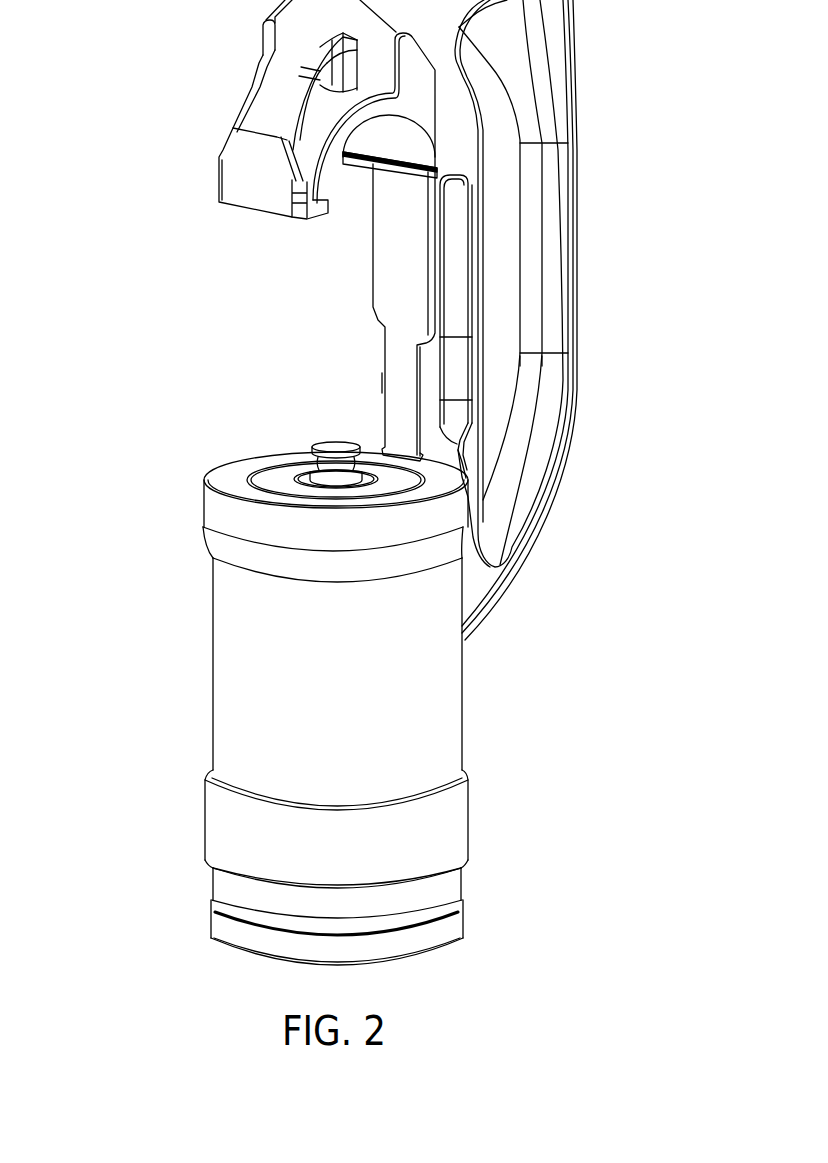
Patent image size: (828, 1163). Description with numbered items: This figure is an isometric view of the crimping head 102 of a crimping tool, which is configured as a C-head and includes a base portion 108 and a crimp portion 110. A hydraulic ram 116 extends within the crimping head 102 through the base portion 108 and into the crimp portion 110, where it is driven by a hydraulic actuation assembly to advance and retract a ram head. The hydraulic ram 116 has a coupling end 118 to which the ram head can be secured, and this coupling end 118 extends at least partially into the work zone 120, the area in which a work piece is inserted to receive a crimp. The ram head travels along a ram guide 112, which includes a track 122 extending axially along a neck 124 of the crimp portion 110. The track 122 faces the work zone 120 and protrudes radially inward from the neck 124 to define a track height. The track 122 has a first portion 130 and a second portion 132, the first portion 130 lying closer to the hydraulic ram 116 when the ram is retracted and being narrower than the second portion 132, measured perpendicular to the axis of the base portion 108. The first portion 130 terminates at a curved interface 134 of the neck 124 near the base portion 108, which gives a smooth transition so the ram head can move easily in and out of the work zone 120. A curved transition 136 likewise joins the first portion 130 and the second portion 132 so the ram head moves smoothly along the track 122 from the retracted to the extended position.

The crimping head 102 is at (148, 242).
The base portion 108 is at (494, 808).
The crimp portion 110 is at (594, 258).
The ram guide 112 is at (336, 304).
The hydraulic ram 116 is at (277, 475).
The coupling end 118 is at (319, 432).
The work zone 120 is at (256, 331).
The track 122 is at (393, 312).
The neck 124 is at (502, 378).
The first portion 130 is at (405, 418).
The second portion 132 is at (408, 238).
The curved interface 134 is at (443, 428).
The curved transition 136 is at (440, 337).